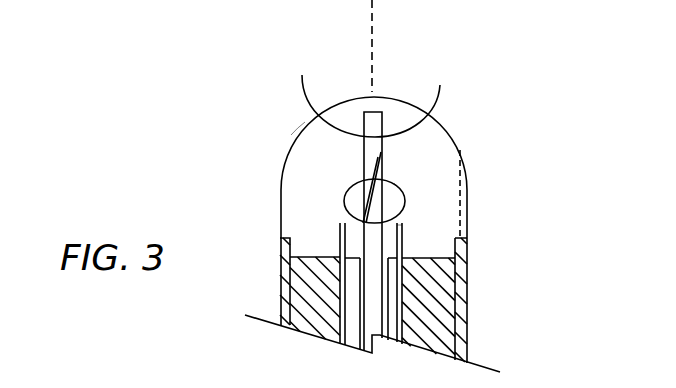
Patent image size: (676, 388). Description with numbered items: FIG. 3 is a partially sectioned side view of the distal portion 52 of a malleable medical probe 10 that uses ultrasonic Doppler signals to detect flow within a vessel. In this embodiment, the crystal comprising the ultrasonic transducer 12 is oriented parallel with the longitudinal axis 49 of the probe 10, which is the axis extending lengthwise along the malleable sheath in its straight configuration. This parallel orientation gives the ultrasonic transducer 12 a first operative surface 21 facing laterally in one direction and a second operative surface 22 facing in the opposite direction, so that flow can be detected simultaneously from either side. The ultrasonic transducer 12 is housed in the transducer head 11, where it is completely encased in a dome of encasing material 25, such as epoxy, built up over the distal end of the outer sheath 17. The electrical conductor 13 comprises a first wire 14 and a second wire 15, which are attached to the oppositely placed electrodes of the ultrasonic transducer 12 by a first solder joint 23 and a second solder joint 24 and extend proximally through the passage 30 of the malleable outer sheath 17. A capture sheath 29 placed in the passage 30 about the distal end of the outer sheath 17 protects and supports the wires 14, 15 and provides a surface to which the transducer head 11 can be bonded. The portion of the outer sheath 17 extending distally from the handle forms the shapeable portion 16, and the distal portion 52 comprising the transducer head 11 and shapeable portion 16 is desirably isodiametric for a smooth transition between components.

The malleable medical probe 10 is at (183, 105).
The distal portion 52 is at (202, 162).
The transducer head 11 is at (287, 150).
The encasing material 25 is at (297, 130).
The first operative surface 21 is at (329, 96).
The second operative surface 22 is at (415, 100).
The ultrasonic transducer 12 is at (372, 117).
The longitudinal axis 49 is at (373, 72).
The second solder joint 24 is at (396, 186).
The first solder joint 23 is at (350, 197).
The first wire 14 is at (343, 231).
The second wire 15 is at (398, 228).
The electrical conductor 13 is at (408, 232).
The outer sheath 17 is at (470, 288).
The capture sheath 29 is at (315, 288).
The shapeable portion 16 is at (472, 332).
The passage 30 is at (300, 340).